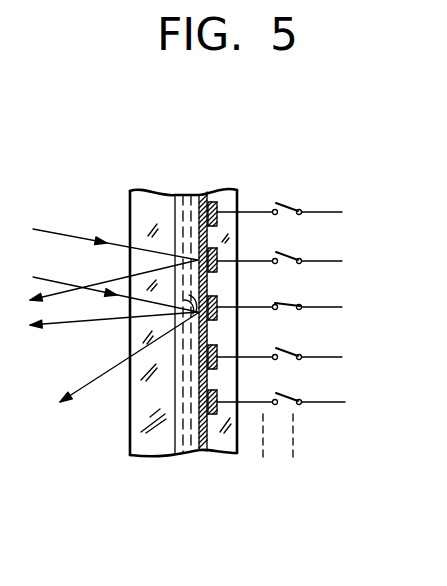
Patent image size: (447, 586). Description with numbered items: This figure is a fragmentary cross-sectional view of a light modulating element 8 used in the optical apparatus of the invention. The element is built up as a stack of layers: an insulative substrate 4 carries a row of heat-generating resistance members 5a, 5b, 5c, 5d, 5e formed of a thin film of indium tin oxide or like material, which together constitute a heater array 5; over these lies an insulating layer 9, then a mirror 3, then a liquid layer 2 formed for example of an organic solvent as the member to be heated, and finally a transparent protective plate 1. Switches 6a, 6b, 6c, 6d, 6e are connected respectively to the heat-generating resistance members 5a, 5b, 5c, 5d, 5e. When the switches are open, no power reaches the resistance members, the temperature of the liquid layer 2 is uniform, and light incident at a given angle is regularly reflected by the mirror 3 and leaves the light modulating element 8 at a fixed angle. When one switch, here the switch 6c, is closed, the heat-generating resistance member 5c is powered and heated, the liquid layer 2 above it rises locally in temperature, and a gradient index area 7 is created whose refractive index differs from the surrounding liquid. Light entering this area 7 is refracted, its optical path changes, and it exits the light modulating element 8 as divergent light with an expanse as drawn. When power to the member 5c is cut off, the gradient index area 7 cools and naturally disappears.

The transparent protective plate 1 is at (141, 200).
The liquid layer 2 is at (187, 205).
The mirror 3 is at (203, 200).
The insulative substrate 4 is at (230, 200).
The heater array 5 is at (230, 456).
The heat-generating resistance member 5a is at (218, 222).
The heat-generating resistance member 5b is at (218, 269).
The heat-generating resistance member 5c is at (218, 316).
The heat-generating resistance member 5d is at (218, 364).
The heat-generating resistance member 5e is at (222, 412).
The switch 6a is at (283, 200).
The switch 6b is at (290, 253).
The switch 6c is at (290, 303).
The switch 6d is at (290, 351).
The switch 6e is at (290, 396).
The gradient index area 7 is at (198, 313).
The light modulating element 8 is at (160, 186).
The insulating layer 9 is at (207, 455).